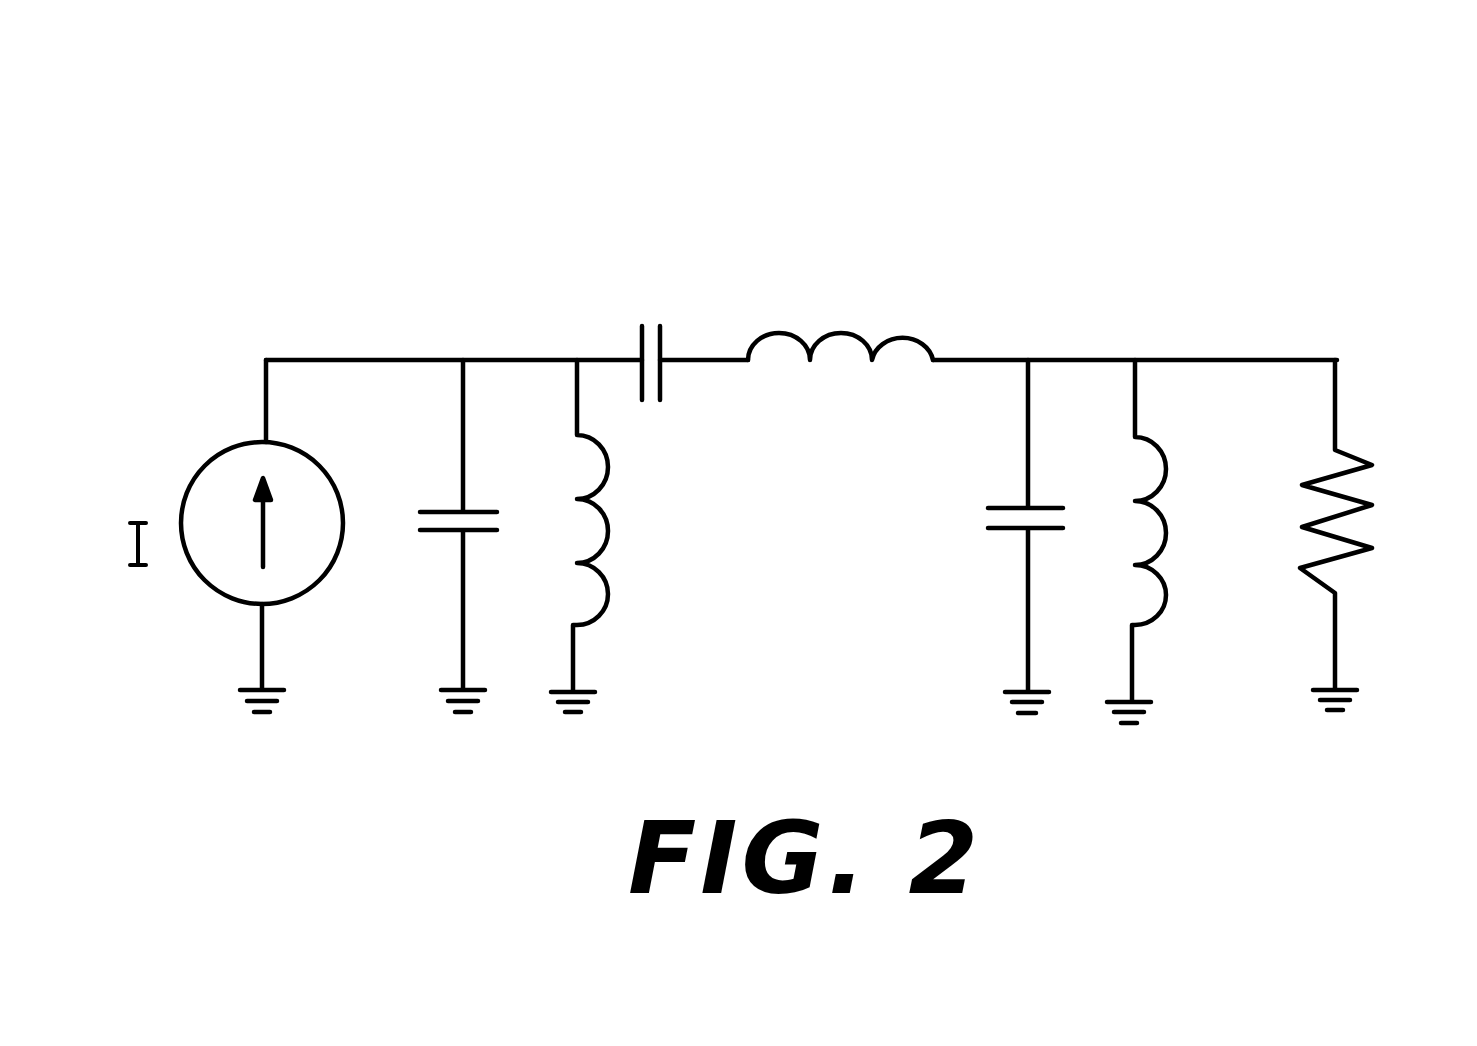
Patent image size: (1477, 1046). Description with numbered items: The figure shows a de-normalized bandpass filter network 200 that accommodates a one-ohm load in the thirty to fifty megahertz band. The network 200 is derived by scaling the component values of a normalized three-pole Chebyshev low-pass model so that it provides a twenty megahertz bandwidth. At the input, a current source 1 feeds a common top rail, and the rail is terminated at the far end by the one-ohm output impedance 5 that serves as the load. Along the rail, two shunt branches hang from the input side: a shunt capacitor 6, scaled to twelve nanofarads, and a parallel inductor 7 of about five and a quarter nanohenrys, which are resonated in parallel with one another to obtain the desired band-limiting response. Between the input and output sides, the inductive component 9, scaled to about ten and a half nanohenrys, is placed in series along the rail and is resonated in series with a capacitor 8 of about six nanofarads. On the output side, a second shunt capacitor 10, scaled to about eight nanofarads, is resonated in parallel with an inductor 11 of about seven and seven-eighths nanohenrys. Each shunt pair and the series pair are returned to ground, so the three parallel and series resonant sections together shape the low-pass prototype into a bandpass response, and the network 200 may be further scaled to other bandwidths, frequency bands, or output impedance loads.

The current source 1 is at (203, 467).
The one-ohm output impedance 5 is at (1360, 458).
The shunt capacitor 6 is at (443, 507).
The inductor 7 is at (618, 525).
The capacitor 8 is at (637, 347).
The inductive component 9 is at (893, 330).
The shunt capacitor 10 is at (1007, 502).
The inductor 11 is at (1167, 517).
The network 200 is at (1035, 253).